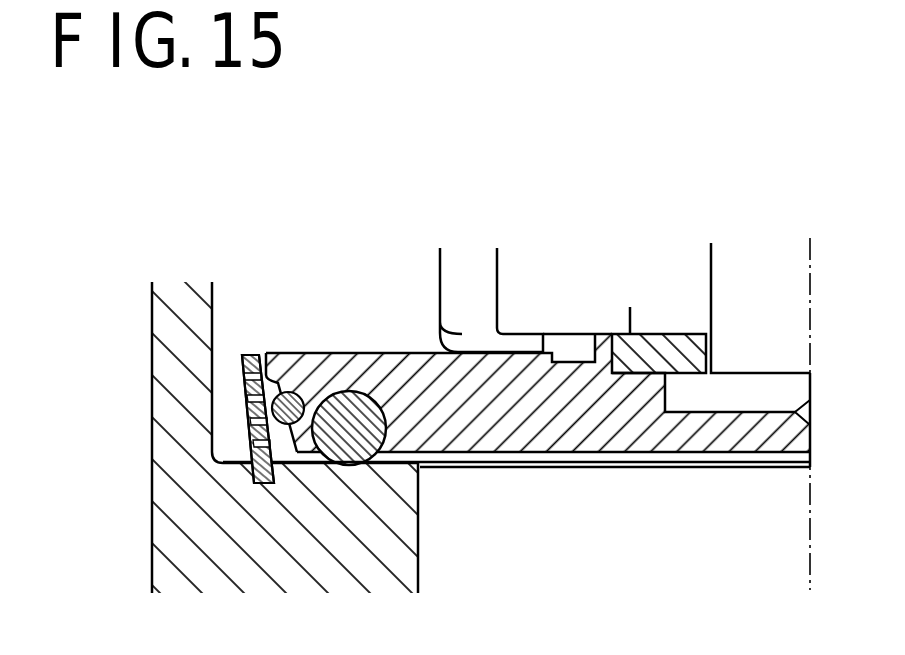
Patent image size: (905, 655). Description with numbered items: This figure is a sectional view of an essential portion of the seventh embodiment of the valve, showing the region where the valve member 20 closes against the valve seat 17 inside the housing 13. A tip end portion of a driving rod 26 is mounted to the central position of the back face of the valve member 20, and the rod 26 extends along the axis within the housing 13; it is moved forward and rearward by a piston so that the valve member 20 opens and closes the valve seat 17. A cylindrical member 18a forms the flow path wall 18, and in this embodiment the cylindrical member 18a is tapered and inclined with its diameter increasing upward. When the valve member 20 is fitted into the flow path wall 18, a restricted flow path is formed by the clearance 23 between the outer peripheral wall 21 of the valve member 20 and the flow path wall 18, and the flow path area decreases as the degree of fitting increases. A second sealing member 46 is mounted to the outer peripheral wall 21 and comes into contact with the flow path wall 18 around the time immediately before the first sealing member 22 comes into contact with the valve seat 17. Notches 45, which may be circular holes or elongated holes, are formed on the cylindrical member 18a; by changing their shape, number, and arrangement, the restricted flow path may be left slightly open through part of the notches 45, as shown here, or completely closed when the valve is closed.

The housing 13 is at (170, 342).
The valve seat 17 is at (413, 550).
The flow path wall 18 is at (246, 332).
The cylindrical member 18a is at (253, 354).
The valve member 20 is at (461, 377).
The outer peripheral wall 21 is at (284, 376).
The first sealing member 22 is at (370, 400).
The clearance 23 is at (254, 387).
The driving rod 26 is at (733, 292).
The notches 45 is at (258, 409).
The second sealing member 46 is at (331, 353).